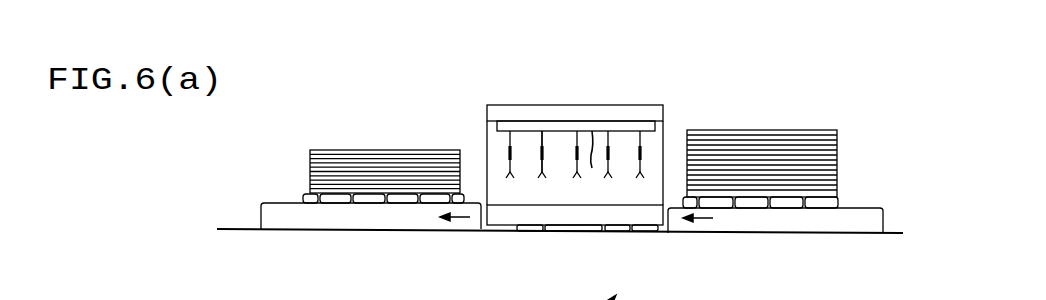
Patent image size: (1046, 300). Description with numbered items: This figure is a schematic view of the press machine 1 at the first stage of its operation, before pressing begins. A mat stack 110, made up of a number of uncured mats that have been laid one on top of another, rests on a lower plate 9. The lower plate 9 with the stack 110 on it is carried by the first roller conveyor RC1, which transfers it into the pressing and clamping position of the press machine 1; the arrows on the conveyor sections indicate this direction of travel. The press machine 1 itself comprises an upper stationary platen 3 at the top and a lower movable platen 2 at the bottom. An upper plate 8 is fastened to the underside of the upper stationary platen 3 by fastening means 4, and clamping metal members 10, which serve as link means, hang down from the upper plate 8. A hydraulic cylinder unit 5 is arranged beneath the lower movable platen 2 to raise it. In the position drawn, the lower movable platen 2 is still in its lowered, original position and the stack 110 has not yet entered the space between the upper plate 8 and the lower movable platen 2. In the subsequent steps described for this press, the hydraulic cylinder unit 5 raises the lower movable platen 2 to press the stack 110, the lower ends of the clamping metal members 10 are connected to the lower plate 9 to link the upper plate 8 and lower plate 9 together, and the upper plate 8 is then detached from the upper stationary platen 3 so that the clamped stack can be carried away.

The press machine 1 is at (574, 152).
The lower movable platen 2 is at (562, 215).
The upper stationary platen 3 is at (563, 105).
The fastening means 4 is at (630, 123).
The hydraulic cylinder unit 5 is at (625, 232).
The upper plate 8 is at (575, 167).
The lower plate 9 is at (843, 203).
The clamping metal members 10 is at (538, 143).
The mat stack 110 is at (777, 155).
The first roller conveyor RC1 is at (853, 225).